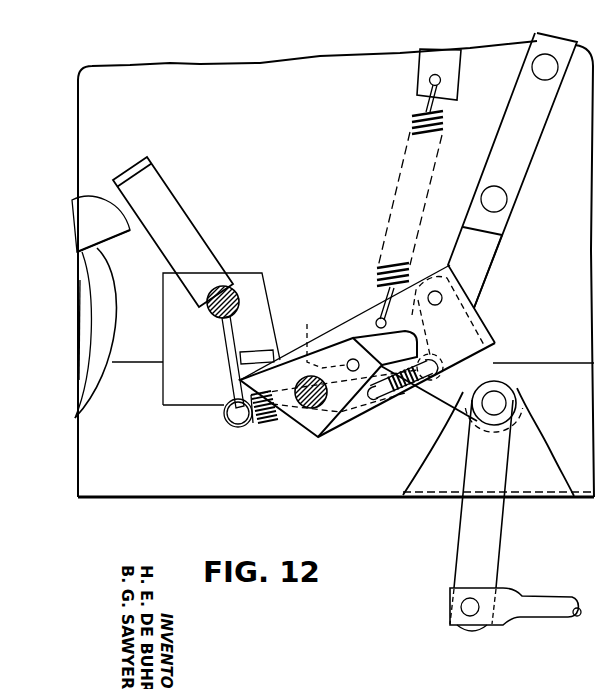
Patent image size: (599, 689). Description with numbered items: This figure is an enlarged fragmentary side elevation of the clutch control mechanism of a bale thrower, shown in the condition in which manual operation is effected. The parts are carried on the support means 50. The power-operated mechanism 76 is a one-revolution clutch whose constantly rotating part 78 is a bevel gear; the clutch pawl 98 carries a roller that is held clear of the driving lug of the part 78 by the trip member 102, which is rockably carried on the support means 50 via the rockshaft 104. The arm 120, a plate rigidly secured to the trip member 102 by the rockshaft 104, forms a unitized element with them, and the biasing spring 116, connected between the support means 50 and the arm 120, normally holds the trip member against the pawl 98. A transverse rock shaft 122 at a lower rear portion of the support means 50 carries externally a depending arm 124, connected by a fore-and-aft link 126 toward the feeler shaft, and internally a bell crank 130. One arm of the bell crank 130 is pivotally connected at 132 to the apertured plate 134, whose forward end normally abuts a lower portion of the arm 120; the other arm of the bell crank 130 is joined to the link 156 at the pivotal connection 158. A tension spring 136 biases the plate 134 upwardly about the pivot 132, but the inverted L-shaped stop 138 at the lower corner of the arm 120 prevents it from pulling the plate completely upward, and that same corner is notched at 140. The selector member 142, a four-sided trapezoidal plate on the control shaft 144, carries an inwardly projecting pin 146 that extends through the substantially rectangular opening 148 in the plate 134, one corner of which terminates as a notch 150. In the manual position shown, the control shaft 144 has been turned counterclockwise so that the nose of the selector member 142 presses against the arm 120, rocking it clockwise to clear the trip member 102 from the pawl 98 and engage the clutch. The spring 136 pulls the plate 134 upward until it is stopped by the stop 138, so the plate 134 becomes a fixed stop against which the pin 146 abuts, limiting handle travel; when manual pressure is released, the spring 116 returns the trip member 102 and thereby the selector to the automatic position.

The support means 50 is at (241, 66).
The power-operated mechanism 76 is at (75, 280).
The constantly rotating part 78 is at (92, 380).
The clutch pawl 98 is at (92, 205).
The trip member 102 is at (196, 241).
The rockshaft 104 is at (213, 312).
The biasing spring 116 is at (254, 428).
The arm 120 is at (226, 349).
The rock shaft 122 is at (500, 404).
The depending arm 124 is at (490, 549).
The link 126 is at (553, 598).
The bell crank 130 is at (488, 362).
The pivotal connection 132 is at (434, 291).
The apertured plate 134 is at (479, 318).
The tension spring 136 is at (412, 120).
The stop 138 is at (255, 352).
The notch 140 is at (234, 392).
The selector member 142 is at (336, 428).
The control shaft 144 is at (308, 408).
The pin 146 is at (352, 358).
The opening 148 is at (376, 394).
The notch 150 is at (318, 338).
The link 156 is at (525, 153).
The pivotal connection 158 is at (427, 387).